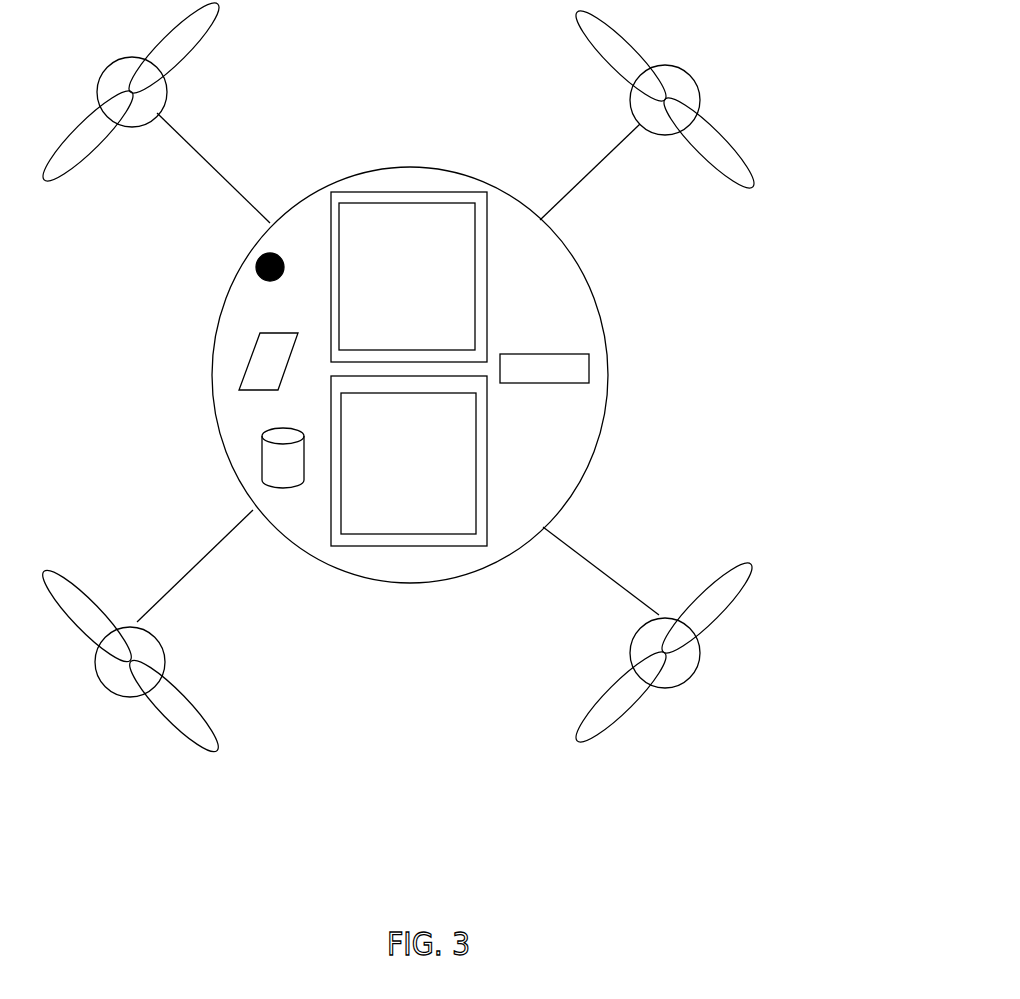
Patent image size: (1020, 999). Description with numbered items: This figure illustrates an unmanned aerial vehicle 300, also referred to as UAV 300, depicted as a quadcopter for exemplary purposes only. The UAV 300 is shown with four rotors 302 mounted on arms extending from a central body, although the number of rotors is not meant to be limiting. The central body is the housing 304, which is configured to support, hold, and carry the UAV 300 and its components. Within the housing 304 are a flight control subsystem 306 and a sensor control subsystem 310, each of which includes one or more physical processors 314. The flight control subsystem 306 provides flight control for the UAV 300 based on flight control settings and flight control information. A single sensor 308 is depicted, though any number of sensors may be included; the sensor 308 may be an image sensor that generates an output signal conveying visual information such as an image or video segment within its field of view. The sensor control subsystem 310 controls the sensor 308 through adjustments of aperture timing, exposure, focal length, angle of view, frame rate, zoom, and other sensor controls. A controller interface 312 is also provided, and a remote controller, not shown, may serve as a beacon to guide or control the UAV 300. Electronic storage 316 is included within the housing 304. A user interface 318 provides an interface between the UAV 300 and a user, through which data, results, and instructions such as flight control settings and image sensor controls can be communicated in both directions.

The unmanned aerial vehicle 300 is at (461, 395).
The rotors 302 is at (710, 600).
The housing 304 is at (232, 420).
The flight control subsystem 306 is at (347, 192).
The sensor 308 is at (258, 263).
The sensor control subsystem 310 is at (350, 546).
The controller interface 312 is at (594, 367).
The physical processors 314 is at (443, 203).
The electronic storage 316 is at (262, 456).
The user interface 318 is at (252, 358).